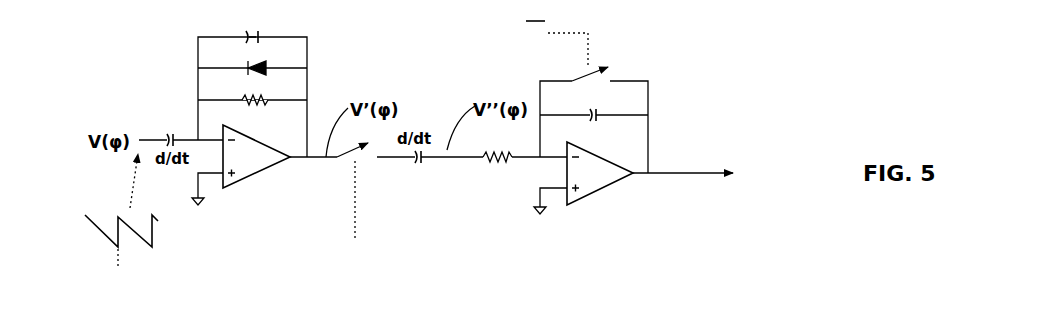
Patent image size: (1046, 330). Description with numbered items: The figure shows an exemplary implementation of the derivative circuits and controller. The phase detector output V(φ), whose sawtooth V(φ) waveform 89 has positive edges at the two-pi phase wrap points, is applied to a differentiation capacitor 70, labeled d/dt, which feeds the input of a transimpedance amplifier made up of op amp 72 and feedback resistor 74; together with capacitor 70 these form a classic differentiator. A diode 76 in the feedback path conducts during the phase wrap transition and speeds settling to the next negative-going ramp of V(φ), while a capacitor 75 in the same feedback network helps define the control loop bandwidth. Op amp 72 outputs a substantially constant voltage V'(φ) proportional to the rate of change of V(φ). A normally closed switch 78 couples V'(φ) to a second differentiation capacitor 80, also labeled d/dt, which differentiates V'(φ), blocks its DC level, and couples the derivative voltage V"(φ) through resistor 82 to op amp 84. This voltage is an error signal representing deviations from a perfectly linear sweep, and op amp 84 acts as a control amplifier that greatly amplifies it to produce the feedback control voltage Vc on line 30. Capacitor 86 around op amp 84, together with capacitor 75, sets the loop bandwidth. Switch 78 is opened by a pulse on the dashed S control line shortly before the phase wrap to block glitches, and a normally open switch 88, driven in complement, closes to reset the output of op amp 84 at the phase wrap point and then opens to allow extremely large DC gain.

The differentiation capacitor 70 is at (168, 100).
The op amp 72 is at (257, 178).
The feedback resistor 74 is at (257, 95).
The capacitor 75 is at (257, 35).
The diode 76 is at (265, 62).
The switch 78 is at (343, 158).
The second differentiation capacitor 80 is at (418, 163).
The resistor 82 is at (498, 165).
The op amp 84 is at (613, 192).
The capacitor 86 is at (600, 102).
The switch 88 is at (617, 68).
The line 30 is at (690, 173).
The V(φ) waveform 89 is at (164, 247).